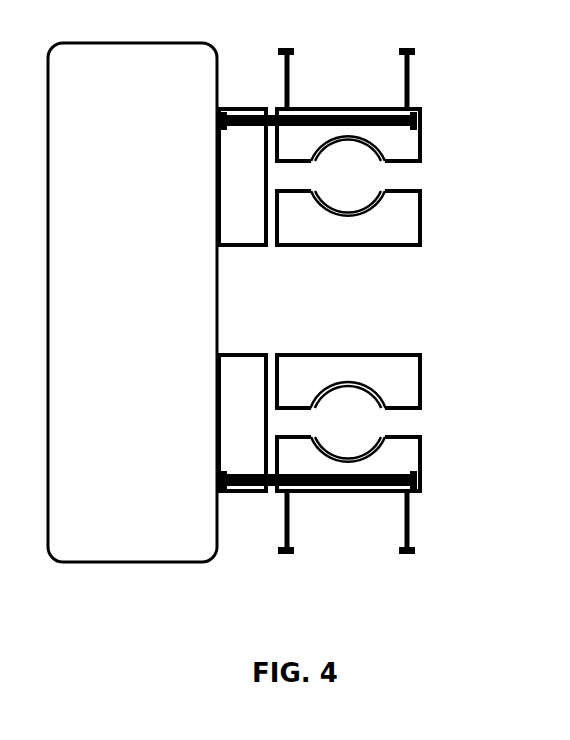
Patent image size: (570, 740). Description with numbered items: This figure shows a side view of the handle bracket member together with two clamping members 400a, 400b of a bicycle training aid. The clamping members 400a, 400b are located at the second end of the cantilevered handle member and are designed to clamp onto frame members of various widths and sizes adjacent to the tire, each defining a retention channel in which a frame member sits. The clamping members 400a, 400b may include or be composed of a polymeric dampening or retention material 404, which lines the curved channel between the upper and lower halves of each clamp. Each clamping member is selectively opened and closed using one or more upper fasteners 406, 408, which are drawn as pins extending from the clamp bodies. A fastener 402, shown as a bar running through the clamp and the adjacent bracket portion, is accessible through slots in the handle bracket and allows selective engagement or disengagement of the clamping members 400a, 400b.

The clamping member 400a is at (422, 140).
The clamping member 400b is at (422, 451).
The fastener 402 is at (245, 116).
The polymeric dampening or retention material 404 is at (367, 210).
The upper fastener 406 is at (292, 84).
The upper fastener 408 is at (411, 78).